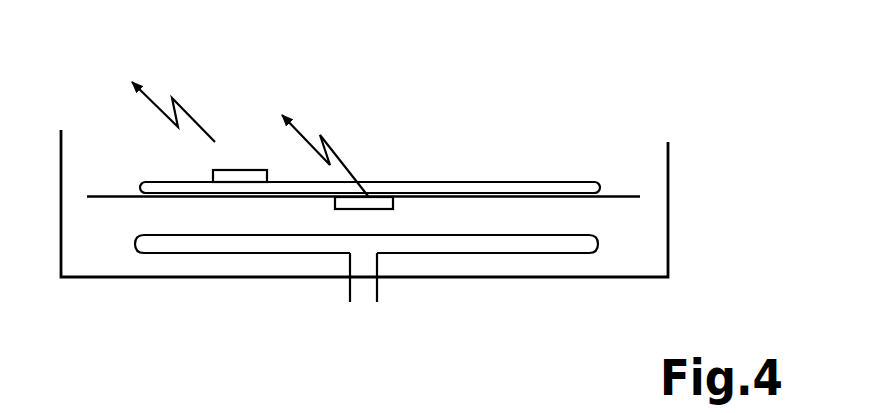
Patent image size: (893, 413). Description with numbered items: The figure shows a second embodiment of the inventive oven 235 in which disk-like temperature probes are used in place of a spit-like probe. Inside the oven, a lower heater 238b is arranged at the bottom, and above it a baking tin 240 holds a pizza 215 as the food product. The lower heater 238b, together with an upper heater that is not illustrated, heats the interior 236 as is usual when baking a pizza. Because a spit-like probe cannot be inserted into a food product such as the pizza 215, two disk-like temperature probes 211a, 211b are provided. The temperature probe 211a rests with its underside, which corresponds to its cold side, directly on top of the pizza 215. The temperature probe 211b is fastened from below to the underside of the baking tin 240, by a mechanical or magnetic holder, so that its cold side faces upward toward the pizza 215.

The oven 235 is at (718, 51).
The interior 236 is at (620, 145).
The baking tin 240 is at (620, 200).
The pizza 215 is at (493, 181).
The disk-like temperature probe 211a is at (247, 158).
The disk-like temperature probe 211b is at (325, 212).
The lower heater 238b is at (511, 254).